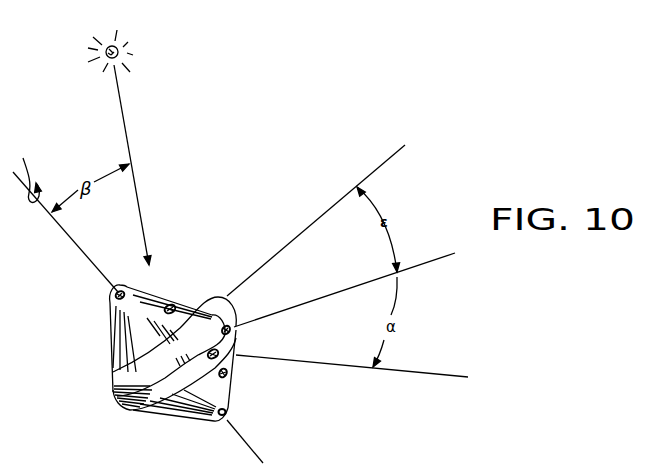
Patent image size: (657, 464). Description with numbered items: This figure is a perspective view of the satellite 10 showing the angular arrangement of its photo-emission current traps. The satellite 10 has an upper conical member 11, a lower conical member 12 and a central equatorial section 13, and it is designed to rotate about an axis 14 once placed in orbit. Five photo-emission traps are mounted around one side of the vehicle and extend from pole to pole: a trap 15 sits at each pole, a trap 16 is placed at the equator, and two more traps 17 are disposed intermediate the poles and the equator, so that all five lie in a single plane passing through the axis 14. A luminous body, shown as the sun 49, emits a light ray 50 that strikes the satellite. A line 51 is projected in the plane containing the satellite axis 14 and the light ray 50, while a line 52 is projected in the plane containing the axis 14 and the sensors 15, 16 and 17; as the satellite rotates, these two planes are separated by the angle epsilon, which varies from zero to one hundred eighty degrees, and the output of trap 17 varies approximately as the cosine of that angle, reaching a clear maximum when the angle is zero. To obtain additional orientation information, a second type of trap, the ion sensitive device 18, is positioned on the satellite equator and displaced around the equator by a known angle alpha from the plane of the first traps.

The satellite 10 is at (104, 380).
The upper conical member 11 is at (161, 368).
The lower conical member 12 is at (183, 405).
The central equatorial section 13 is at (153, 407).
The axis 14 is at (138, 301).
The trap 15 is at (114, 296).
The trap 16 is at (231, 331).
The trap 17 is at (170, 305).
The ion sensitive device 18 is at (210, 350).
The sun 49 is at (101, 45).
The light ray 50 is at (121, 104).
The line 51 is at (383, 164).
The line 52 is at (447, 256).